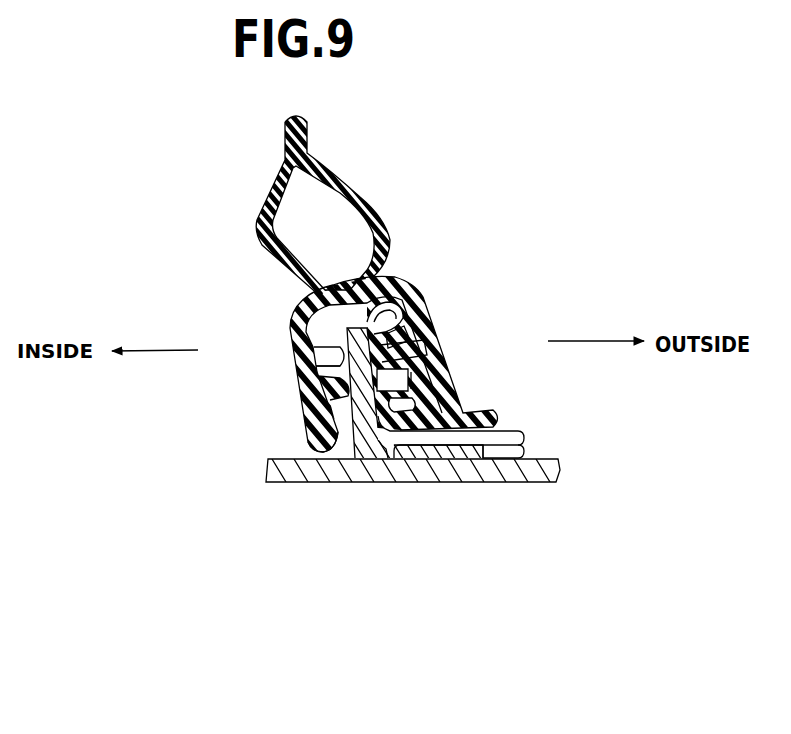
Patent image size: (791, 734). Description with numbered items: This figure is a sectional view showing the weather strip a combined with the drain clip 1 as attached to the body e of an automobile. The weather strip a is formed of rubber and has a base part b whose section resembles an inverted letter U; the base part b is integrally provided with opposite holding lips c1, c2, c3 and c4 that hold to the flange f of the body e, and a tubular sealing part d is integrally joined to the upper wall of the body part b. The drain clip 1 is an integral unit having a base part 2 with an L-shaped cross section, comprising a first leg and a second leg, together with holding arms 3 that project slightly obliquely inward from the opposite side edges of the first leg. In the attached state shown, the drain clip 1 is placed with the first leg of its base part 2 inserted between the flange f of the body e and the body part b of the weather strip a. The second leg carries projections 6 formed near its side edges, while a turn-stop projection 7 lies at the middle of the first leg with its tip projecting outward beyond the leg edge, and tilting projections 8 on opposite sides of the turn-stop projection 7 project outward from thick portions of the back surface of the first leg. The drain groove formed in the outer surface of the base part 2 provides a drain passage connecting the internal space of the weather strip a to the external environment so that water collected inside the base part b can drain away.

The weather strip a is at (287, 307).
The base part b is at (296, 346).
The holding lip c1 is at (410, 407).
The holding lip c2 is at (320, 404).
The holding lip c3 is at (400, 322).
The holding lip c4 is at (316, 367).
The tubular sealing part d is at (372, 198).
The body e is at (330, 466).
The flange f is at (368, 322).
The drain clip 1 is at (444, 458).
The base part 2 is at (421, 440).
The holding arms 3 is at (418, 389).
The projections 6 is at (477, 448).
The turn-stop projection 7 is at (410, 350).
The tilting projections 8 is at (305, 428).